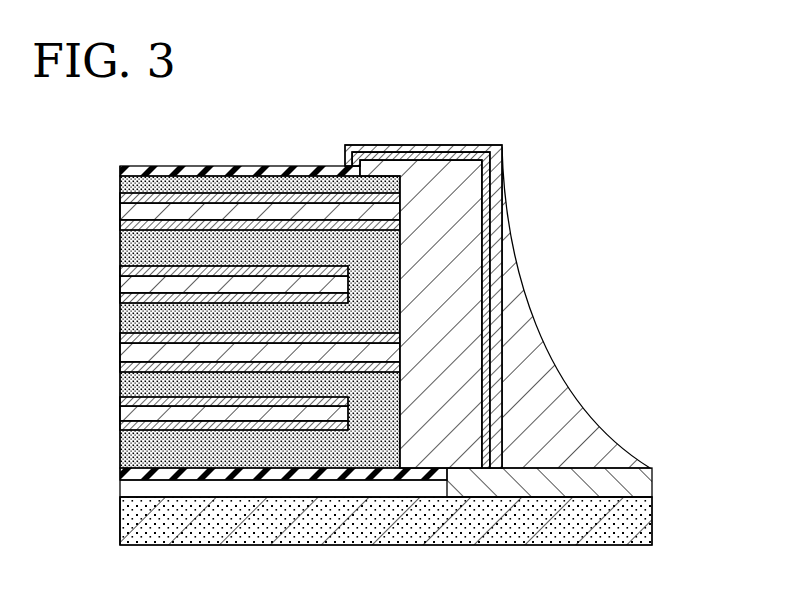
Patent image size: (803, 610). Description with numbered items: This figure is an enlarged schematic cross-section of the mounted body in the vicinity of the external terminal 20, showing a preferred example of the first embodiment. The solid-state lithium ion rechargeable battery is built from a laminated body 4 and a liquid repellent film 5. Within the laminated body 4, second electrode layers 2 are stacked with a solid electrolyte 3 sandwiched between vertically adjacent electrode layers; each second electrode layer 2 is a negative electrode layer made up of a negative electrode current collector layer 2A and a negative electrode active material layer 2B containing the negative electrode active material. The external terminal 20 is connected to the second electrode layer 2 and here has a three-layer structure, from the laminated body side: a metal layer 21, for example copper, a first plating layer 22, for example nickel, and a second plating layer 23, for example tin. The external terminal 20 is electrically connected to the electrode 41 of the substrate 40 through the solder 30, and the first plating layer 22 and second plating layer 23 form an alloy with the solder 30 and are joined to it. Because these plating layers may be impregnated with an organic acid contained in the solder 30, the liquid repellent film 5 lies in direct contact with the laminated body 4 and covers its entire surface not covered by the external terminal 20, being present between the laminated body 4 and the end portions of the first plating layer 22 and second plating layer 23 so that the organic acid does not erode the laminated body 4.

The second electrode layer 2 is at (375, 292).
The negative electrode current collector layer 2A is at (383, 212).
The negative electrode active material layer 2B is at (390, 193).
The solid electrolyte 3 is at (383, 292).
The laminated body 4 is at (282, 158).
The liquid repellent film 5 is at (208, 168).
The external terminal 20 is at (433, 234).
The metal layer 21 is at (400, 172).
The first plating layer 22 is at (450, 157).
The second plating layer 23 is at (398, 43).
The solder 30 is at (555, 392).
The substrate 40 is at (635, 522).
The electrode 41 is at (625, 480).